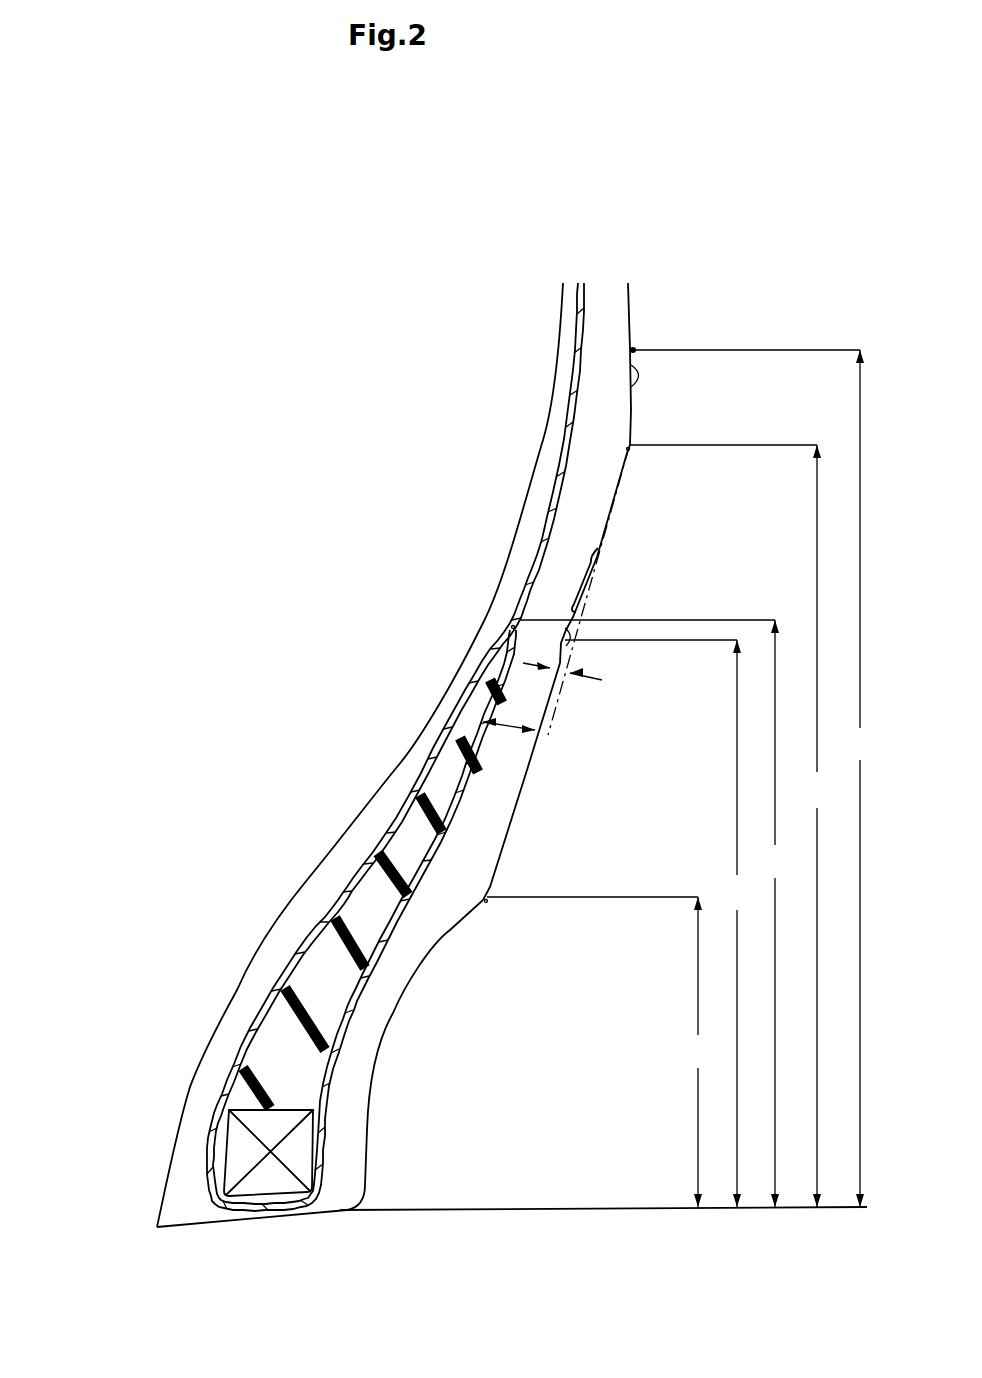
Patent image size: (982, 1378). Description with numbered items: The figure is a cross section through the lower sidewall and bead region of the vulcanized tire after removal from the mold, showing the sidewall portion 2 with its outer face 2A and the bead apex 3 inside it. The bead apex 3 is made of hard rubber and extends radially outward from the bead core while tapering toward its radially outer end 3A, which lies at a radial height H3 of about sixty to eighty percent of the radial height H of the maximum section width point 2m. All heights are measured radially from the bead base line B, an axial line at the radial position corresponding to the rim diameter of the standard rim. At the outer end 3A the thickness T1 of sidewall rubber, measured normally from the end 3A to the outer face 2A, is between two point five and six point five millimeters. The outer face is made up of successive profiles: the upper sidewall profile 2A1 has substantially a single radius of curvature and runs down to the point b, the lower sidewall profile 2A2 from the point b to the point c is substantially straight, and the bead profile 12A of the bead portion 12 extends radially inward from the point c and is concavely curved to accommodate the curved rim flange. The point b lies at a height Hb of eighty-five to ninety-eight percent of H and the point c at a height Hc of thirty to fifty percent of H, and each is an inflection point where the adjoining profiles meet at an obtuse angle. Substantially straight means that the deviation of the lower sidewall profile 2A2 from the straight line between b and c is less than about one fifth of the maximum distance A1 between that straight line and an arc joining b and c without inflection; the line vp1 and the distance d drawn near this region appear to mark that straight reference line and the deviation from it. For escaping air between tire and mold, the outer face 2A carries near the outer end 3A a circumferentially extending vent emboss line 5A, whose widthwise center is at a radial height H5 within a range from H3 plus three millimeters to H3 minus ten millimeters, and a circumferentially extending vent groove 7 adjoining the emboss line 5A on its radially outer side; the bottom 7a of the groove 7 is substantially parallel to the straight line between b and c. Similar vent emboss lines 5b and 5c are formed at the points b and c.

The sidewall portion 2 is at (420, 663).
The outer face of the sidewall portion 2A is at (378, 278).
The upper sidewall profile 2A1 is at (641, 283).
The lower sidewall profile 2A2 is at (636, 385).
The maximum section width point 2m is at (636, 349).
The bead apex 3 is at (283, 1017).
The radially outer end of the bead apex 3A is at (513, 627).
The vent emboss line 5A is at (570, 645).
The vent emboss line at point (b) 5b is at (633, 444).
The vent emboss line at point (c) 5c is at (487, 902).
The vent groove 7 is at (605, 580).
The bottom of the vent groove 7a is at (566, 630).
The rim 12 is at (160, 1110).
The bead profile 12A is at (407, 990).
The point b is at (632, 443).
The point c is at (487, 902).
The distance d is at (593, 555).
The vertical plane vp1 is at (587, 620).
The maximum distance A1 is at (570, 676).
The thickness of sidewall rubber T1 is at (490, 728).
The radial height of the maximum section width point H is at (752, 778).
The radial height of point (b) Hb is at (732, 826).
The radial height of the bead apex outer end H3 is at (653, 913).
The radial height of the vent emboss line center H5 is at (660, 923).
The radial height of point (c) Hc is at (602, 1052).
The bead base line B is at (720, 1208).